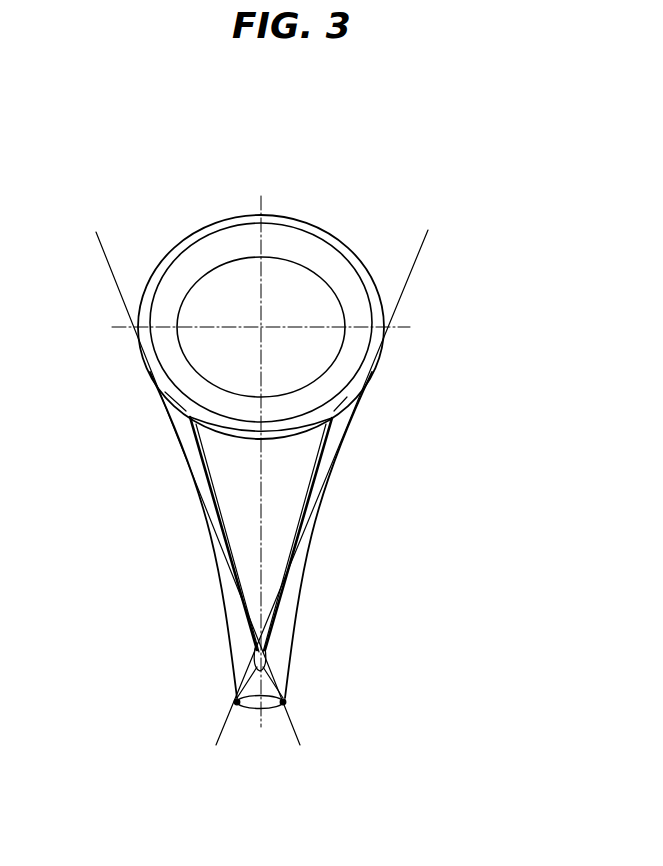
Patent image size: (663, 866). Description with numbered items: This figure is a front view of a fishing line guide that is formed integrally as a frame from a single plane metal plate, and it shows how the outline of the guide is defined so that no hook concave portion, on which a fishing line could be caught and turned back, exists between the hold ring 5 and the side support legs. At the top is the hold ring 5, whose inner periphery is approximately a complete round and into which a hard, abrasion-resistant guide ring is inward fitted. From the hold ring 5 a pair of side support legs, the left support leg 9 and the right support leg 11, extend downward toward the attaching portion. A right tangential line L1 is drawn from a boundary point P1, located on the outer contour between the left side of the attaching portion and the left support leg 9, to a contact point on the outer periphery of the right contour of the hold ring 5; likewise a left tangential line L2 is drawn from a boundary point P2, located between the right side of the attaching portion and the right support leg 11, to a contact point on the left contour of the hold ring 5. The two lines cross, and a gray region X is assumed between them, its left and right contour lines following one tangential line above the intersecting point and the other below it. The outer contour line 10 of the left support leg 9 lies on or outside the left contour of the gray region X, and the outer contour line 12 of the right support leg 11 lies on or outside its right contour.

The hold ring 5 is at (288, 217).
The left support leg 9 is at (200, 497).
The outer contour line of the left support leg 10 is at (232, 622).
The right support leg 11 is at (320, 477).
The outer contour line of the right support leg 12 is at (297, 608).
The gray region X is at (287, 452).
The right tangential line L1 is at (339, 462).
The left tangential line L2 is at (186, 462).
The boundary point P1 is at (233, 690).
The boundary point P2 is at (312, 690).